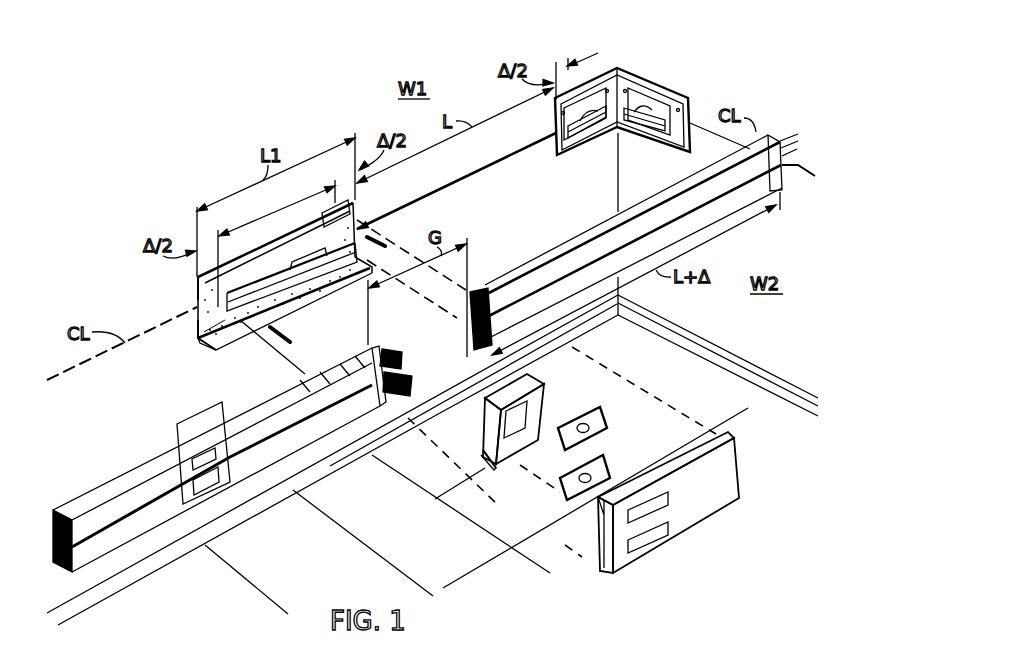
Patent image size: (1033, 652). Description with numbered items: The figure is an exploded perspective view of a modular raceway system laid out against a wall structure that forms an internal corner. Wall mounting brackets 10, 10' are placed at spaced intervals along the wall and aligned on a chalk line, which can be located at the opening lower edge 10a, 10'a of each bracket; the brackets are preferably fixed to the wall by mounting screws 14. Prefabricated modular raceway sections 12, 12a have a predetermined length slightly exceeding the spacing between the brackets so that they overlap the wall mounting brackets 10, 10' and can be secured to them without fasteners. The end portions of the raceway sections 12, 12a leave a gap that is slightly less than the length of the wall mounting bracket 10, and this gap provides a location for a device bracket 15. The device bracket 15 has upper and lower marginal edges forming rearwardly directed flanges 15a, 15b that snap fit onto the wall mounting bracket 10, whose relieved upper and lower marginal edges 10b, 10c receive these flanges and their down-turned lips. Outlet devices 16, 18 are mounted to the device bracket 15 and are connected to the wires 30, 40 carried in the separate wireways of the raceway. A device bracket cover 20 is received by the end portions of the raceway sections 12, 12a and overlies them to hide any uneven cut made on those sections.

The wall mounting bracket 10 is at (247, 275).
The opening lower edge 10a is at (287, 278).
The relieved upper marginal edge 10b is at (195, 279).
The relieved lower marginal edge 10c is at (197, 341).
The wall mounting bracket 10' is at (622, 90).
The opening lower edge 10'a is at (617, 143).
The modular raceway section 12 is at (751, 123).
The modular raceway section 12a is at (121, 477).
The mounting screw 14 is at (277, 338).
The device bracket 15 is at (497, 474).
The upper rearwardly formed flange 15a is at (558, 358).
The lower rearwardly formed flange 15b is at (485, 458).
The outlet device 16 is at (567, 502).
The outlet device 18 is at (625, 388).
The device bracket cover 20 is at (712, 497).
The wire 30 is at (470, 355).
The wire 40 is at (428, 320).